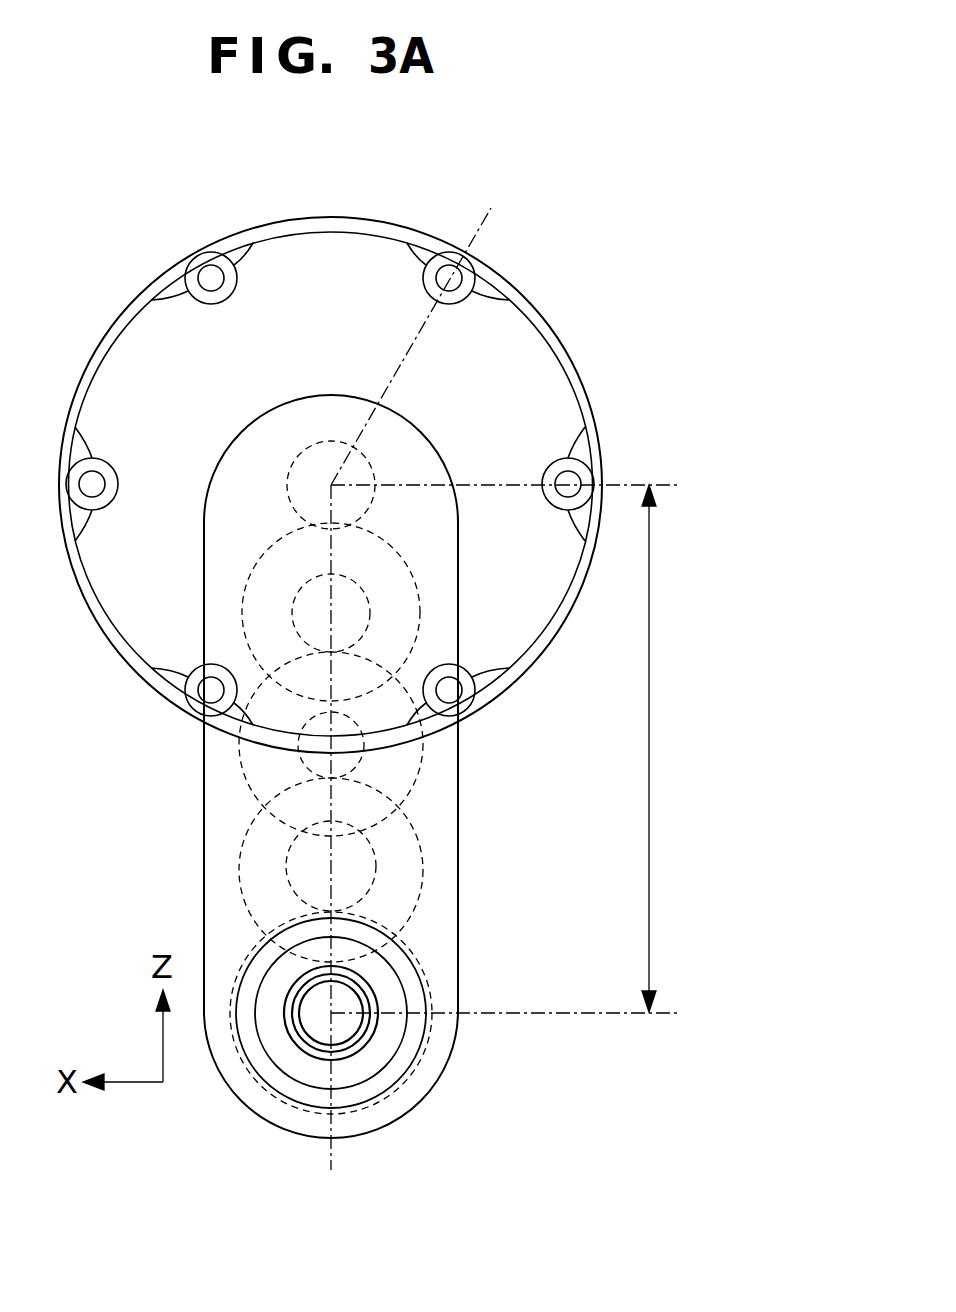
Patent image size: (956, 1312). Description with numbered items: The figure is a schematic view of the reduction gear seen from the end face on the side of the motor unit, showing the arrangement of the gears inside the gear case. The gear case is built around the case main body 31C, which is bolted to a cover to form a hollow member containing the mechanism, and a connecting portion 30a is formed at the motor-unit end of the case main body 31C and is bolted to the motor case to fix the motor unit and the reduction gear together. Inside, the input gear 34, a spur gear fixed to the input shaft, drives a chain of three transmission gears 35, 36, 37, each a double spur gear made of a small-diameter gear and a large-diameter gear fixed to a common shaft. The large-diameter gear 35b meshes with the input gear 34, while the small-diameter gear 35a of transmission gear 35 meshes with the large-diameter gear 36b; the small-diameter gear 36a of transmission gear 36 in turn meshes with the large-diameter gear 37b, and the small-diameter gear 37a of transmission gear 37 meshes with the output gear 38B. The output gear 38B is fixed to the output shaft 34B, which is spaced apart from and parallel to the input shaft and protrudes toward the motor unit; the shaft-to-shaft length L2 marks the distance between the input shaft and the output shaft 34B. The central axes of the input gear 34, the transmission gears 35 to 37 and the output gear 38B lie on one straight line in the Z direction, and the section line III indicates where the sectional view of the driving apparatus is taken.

The connecting portion 30a is at (572, 388).
The case main body 31C is at (582, 337).
The input gear 34 is at (293, 465).
The transmission gear 35 is at (338, 553).
The small-diameter gear 35a is at (363, 582).
The large-diameter gear 35b is at (437, 598).
The transmission gear 36 is at (330, 754).
The small-diameter gear 36a is at (367, 762).
The large-diameter gear 36b is at (240, 757).
The transmission gear 37 is at (335, 870).
The small-diameter gear 37a is at (368, 833).
The large-diameter gear 37b is at (240, 872).
The output gear 38B is at (422, 1057).
The output shaft 34B is at (307, 1043).
The shaft-to-shaft length L2 is at (664, 748).
The section line III is at (503, 228).